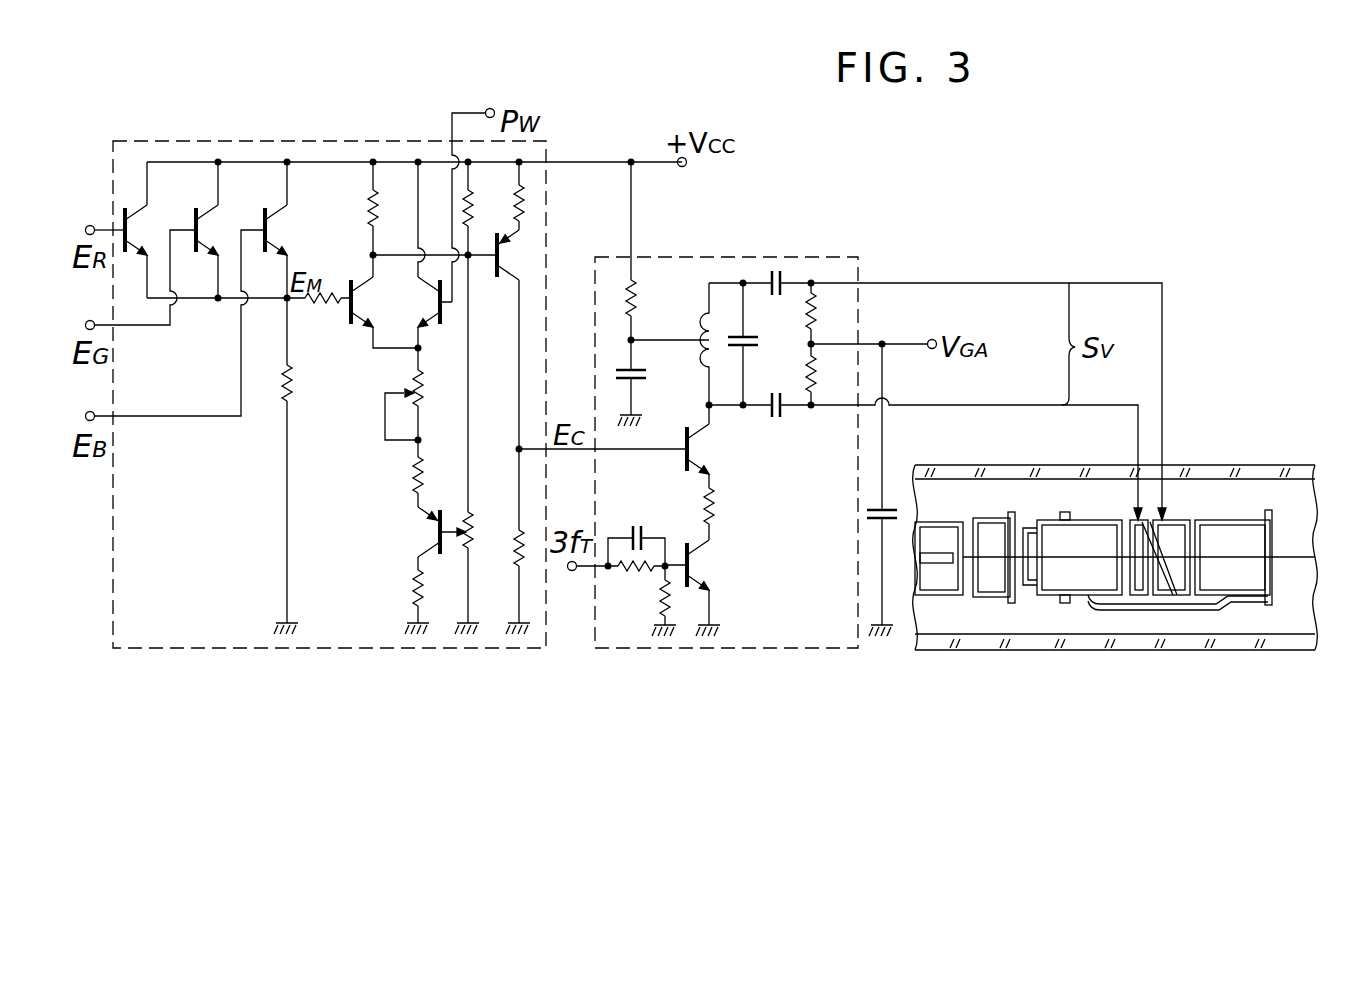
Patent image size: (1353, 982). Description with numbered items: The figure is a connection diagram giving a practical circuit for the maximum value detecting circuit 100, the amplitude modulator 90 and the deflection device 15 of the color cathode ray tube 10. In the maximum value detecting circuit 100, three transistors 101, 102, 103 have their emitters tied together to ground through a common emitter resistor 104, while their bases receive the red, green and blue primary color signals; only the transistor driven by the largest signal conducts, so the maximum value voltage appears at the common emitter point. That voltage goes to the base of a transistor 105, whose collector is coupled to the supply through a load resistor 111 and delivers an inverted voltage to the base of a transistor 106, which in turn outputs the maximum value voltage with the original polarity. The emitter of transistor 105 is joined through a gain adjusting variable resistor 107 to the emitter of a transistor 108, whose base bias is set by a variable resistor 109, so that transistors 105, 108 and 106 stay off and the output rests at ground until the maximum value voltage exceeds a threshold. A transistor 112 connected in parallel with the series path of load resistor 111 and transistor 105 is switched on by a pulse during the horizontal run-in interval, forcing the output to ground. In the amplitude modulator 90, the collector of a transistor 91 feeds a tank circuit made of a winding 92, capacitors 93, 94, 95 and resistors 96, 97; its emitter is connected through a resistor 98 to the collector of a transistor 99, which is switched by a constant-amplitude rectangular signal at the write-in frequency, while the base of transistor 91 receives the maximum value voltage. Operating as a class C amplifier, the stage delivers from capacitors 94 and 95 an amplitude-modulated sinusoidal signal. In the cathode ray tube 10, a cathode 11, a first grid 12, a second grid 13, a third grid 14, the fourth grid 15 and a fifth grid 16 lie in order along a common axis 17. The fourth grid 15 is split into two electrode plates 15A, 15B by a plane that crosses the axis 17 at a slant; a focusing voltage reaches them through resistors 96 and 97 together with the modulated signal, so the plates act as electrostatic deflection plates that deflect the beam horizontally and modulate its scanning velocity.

The maximum value detecting circuit 100 is at (162, 650).
The transistor 101 is at (140, 224).
The transistor 102 is at (210, 224).
The transistor 103 is at (281, 224).
The common emitter resistor 104 is at (289, 400).
The transistor 105 is at (346, 313).
The transistor 106 is at (494, 272).
The gain adjusting variable resistor 107 is at (425, 403).
The transistor 108 is at (430, 530).
The variable resistor 109 is at (474, 542).
The load resistor 111 is at (375, 222).
The transistor 112 is at (445, 318).
The amplitude modulator 90 is at (705, 244).
The transistor 91 is at (683, 462).
The winding 92 is at (702, 350).
The capacitor 93 is at (746, 338).
The capacitor 94 is at (772, 294).
The capacitor 95 is at (780, 413).
The resistor 96 is at (820, 308).
The resistor 97 is at (811, 375).
The resistor 98 is at (714, 505).
The transistor 99 is at (705, 560).
The color cathode ray tube 10 is at (1285, 472).
The cathode 11 is at (937, 552).
The first grid 12 is at (978, 518).
The second grid 13 is at (1012, 512).
The third grid 14 is at (1065, 512).
The fourth grid 15 is at (1142, 612).
The electrode plate 15A is at (1175, 520).
The electrode plate 15B is at (1130, 520).
The fifth grid 16 is at (1232, 520).
The axis 17 is at (1292, 560).